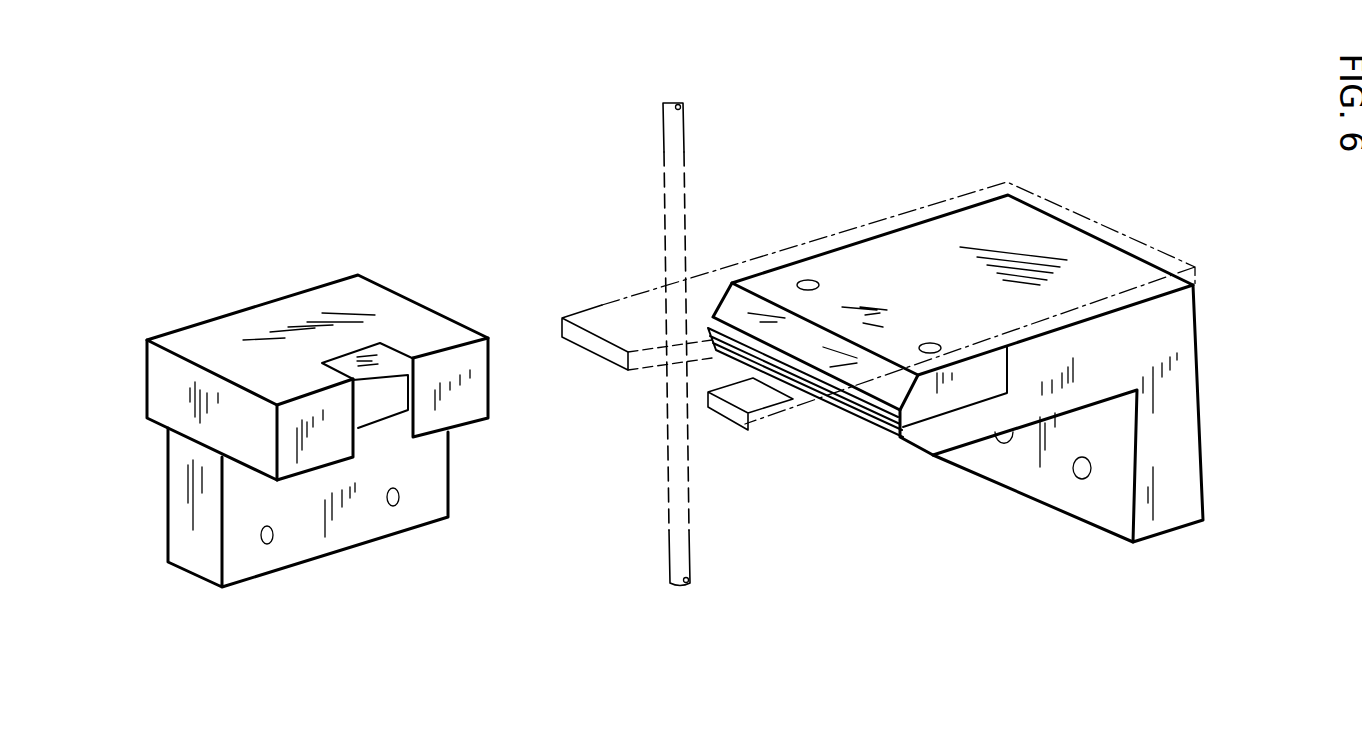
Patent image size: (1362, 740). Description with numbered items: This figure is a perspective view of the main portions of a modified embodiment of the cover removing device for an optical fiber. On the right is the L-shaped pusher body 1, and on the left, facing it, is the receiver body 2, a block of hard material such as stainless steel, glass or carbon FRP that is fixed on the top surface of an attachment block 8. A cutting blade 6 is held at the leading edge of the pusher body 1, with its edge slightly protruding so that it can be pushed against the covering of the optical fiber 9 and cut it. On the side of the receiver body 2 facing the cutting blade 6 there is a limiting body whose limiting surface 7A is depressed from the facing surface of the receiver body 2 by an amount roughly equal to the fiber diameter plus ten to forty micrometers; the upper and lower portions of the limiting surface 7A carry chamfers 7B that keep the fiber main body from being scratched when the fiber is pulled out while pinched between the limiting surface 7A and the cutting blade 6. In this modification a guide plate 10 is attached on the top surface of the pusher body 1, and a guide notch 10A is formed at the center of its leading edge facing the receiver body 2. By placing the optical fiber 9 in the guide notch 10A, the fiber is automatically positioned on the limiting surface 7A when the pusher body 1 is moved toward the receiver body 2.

The pusher body 1 is at (1118, 212).
The receiver body 2 is at (263, 283).
The cutting blade 6 is at (873, 427).
The limiting surface 7A is at (372, 405).
The chamfers 7B is at (388, 352).
The attachment block 8 is at (180, 472).
The optical fiber 9 is at (677, 473).
The guide plate 10 is at (852, 232).
The guide notch 10A is at (705, 388).